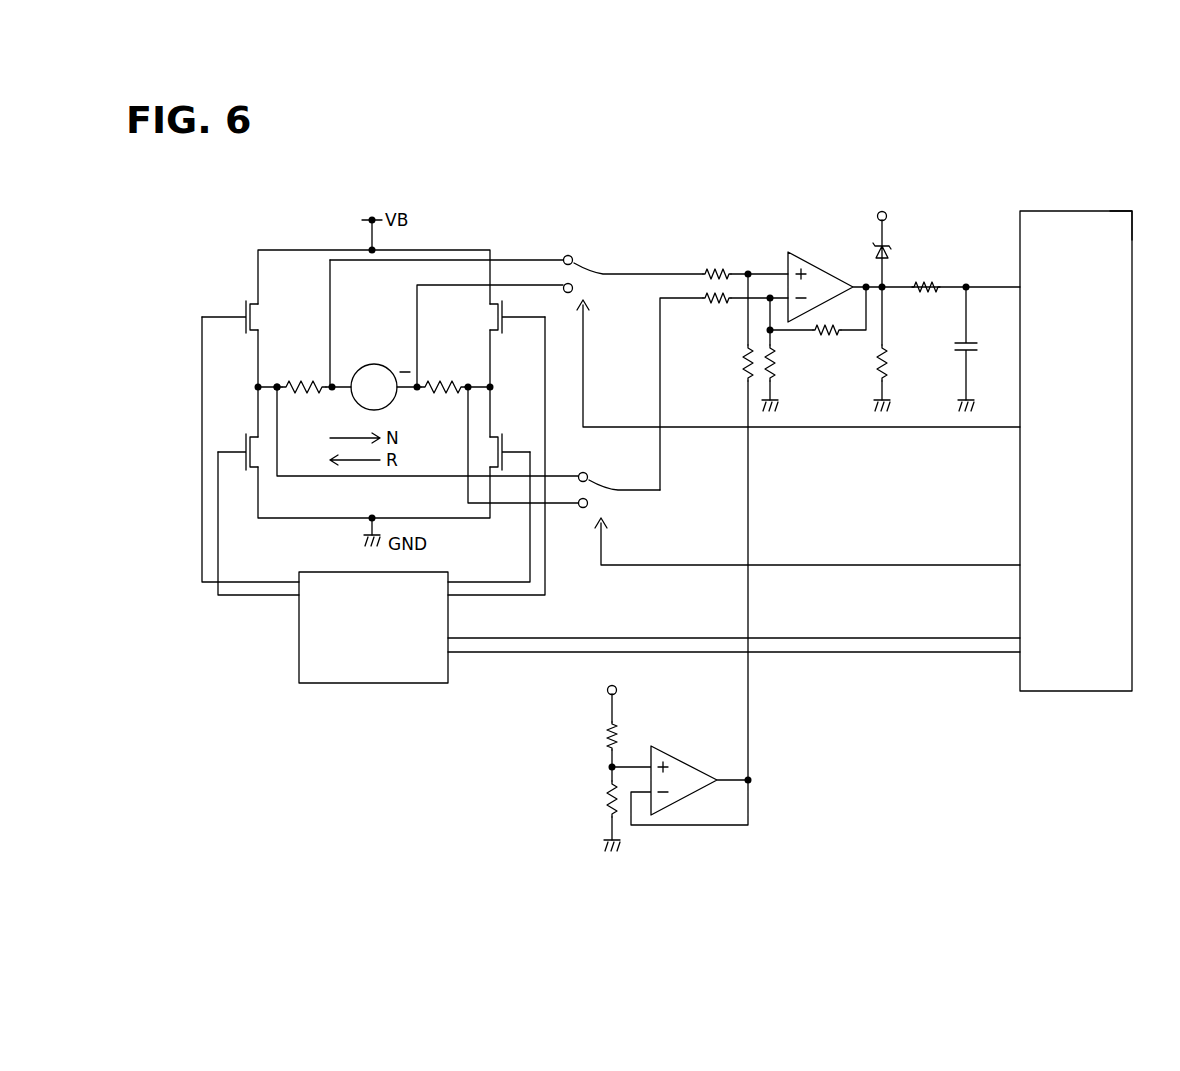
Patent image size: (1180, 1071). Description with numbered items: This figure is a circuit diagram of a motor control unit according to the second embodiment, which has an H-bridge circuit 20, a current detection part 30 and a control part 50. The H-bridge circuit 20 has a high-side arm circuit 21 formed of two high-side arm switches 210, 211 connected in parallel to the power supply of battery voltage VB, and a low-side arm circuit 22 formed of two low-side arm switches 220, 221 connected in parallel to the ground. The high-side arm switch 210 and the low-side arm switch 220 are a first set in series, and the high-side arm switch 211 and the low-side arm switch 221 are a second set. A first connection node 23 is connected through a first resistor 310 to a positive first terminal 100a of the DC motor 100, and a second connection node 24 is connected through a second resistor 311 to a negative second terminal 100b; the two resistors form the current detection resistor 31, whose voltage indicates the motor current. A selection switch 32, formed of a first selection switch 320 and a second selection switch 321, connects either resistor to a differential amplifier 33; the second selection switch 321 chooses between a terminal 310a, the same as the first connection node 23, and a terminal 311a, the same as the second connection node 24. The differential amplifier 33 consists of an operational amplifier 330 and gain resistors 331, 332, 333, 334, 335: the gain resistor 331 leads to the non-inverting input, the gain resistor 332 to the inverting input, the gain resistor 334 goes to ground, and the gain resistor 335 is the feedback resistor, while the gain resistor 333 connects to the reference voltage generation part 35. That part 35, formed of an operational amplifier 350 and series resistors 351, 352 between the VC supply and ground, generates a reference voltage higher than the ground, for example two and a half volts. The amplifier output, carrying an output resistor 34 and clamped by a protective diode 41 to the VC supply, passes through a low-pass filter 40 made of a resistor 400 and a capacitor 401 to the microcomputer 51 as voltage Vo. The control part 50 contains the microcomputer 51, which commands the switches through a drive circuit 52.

The H-bridge circuit 20 is at (249, 234).
The high-side arm circuit 21 is at (500, 244).
The low-side arm circuit 22 is at (245, 529).
The first connection node 23 is at (258, 387).
The second connection node 24 is at (494, 387).
The current detection part 30 is at (701, 209).
The current detection resistor 31 is at (326, 328).
The selection switch 32 is at (624, 328).
The differential amplifier 33 is at (857, 475).
The output resistor 34 is at (892, 366).
The reference voltage generation part 35 is at (652, 756).
The low-pass filter 40 is at (964, 307).
The protective diode 41 is at (892, 252).
The control part 50 is at (1092, 416).
The microcomputer 51 is at (1130, 212).
The drive circuit 52 is at (452, 675).
The DC motor 100 is at (374, 364).
The first terminal 100a is at (332, 391).
The second terminal 100b is at (417, 391).
The high-side arm switch 210 is at (244, 310).
The high-side arm switch 211 is at (506, 326).
The low-side arm switch 220 is at (246, 466).
The low-side arm switch 221 is at (506, 446).
The first resistor 310 is at (302, 394).
The terminal 310a is at (277, 386).
The second resistor 311 is at (455, 394).
The terminal 311a is at (468, 385).
The first selection switch 320 is at (580, 258).
The second selection switch 321 is at (588, 485).
The operational amplifier 330 is at (810, 262).
The gain resistor 331 is at (718, 271).
The gain resistor 332 is at (730, 304).
The gain resistor 333 is at (746, 365).
The gain resistor 334 is at (776, 368).
The gain resistor 335 is at (830, 336).
The operational amplifier 350 is at (680, 758).
The resistor 351 is at (606, 733).
The resistor 352 is at (606, 798).
The resistor 400 is at (922, 296).
The capacitor 401 is at (974, 345).